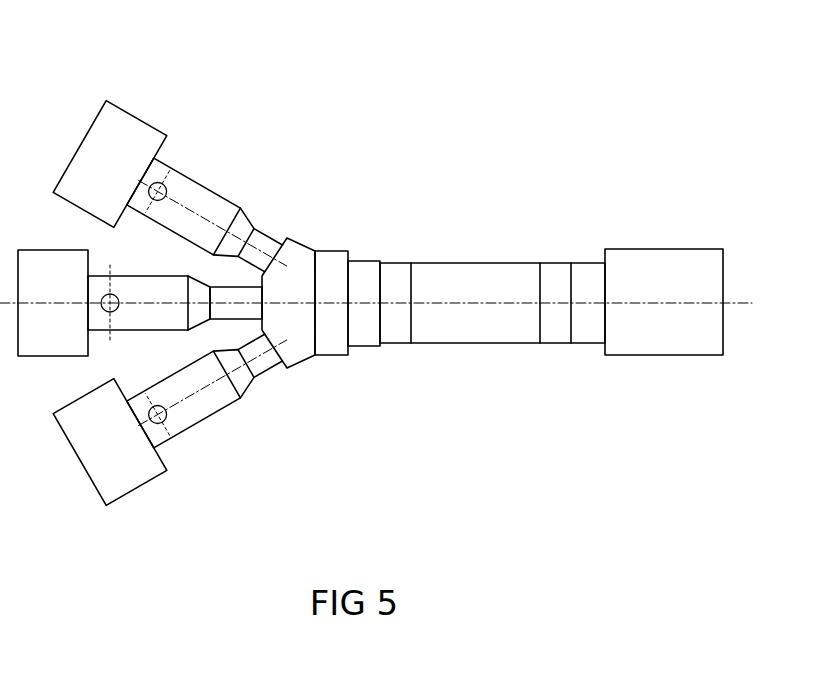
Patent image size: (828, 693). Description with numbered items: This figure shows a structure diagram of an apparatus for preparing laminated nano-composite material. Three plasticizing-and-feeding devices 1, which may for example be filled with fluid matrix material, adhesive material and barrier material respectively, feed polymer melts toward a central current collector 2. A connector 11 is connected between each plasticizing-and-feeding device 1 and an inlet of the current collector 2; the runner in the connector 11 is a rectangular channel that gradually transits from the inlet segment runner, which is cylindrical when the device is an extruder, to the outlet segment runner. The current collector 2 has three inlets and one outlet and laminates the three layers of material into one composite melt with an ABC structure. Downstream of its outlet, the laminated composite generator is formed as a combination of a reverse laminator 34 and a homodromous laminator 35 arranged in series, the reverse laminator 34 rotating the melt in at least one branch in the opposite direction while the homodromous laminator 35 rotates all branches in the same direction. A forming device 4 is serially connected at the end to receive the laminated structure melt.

The plasticizing-and-feeding device 1 is at (98, 142).
The connector 11 is at (255, 243).
The current collector 2 is at (295, 253).
The reverse laminator 34 is at (355, 270).
The homodromous laminator 35 is at (392, 283).
The forming device 4 is at (647, 267).